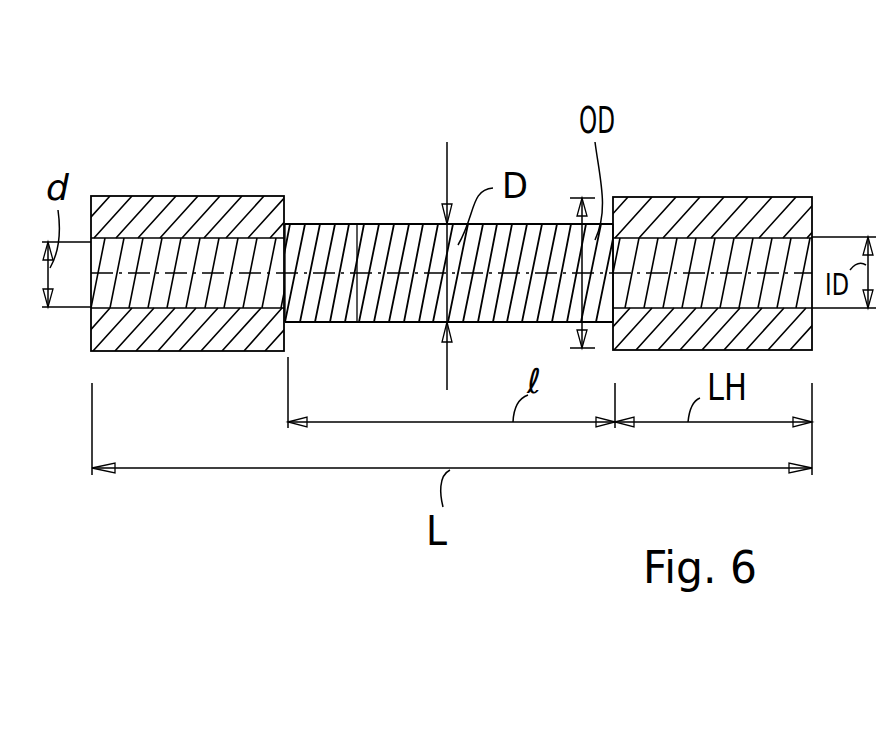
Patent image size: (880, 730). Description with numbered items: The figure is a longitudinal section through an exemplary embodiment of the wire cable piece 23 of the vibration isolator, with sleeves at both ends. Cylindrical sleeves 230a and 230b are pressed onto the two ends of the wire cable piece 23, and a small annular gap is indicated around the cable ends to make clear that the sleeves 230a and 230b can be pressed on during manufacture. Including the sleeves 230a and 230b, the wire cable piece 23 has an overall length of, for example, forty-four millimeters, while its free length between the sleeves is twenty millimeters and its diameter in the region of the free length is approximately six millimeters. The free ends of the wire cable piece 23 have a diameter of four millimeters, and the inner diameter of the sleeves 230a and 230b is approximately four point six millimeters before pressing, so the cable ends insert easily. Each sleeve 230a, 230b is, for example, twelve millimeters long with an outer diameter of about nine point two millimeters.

The wire cable piece 23 is at (297, 130).
The cylindrical sleeve 230a is at (167, 194).
The cylindrical sleeve 230b is at (687, 197).